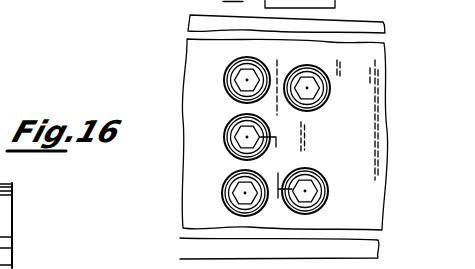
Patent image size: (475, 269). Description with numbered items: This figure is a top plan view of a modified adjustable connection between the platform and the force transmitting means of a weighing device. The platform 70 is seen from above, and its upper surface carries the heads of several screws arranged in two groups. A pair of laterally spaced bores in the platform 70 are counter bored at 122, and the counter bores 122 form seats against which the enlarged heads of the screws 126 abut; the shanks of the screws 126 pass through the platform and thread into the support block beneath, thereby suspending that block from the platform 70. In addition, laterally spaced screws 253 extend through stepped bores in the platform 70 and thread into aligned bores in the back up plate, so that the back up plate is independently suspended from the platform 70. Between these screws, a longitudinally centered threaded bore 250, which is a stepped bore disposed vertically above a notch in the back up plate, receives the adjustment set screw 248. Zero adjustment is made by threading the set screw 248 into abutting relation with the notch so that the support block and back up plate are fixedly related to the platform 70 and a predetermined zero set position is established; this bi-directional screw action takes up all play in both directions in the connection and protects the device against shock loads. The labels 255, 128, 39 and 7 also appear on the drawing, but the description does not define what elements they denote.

The platform 70 is at (342, 96).
The laterally spaced screws 253 is at (228, 70).
The screw head 255 is at (262, 63).
The longitudinally centered threaded bore 250 is at (233, 130).
The adjustment set screw 248 is at (234, 137).
The counter bores 122 is at (324, 103).
The slot 128 is at (319, 112).
The screws 126 is at (294, 167).
The frame member 39 is at (8, 210).
The section line 7 is at (164, 118).